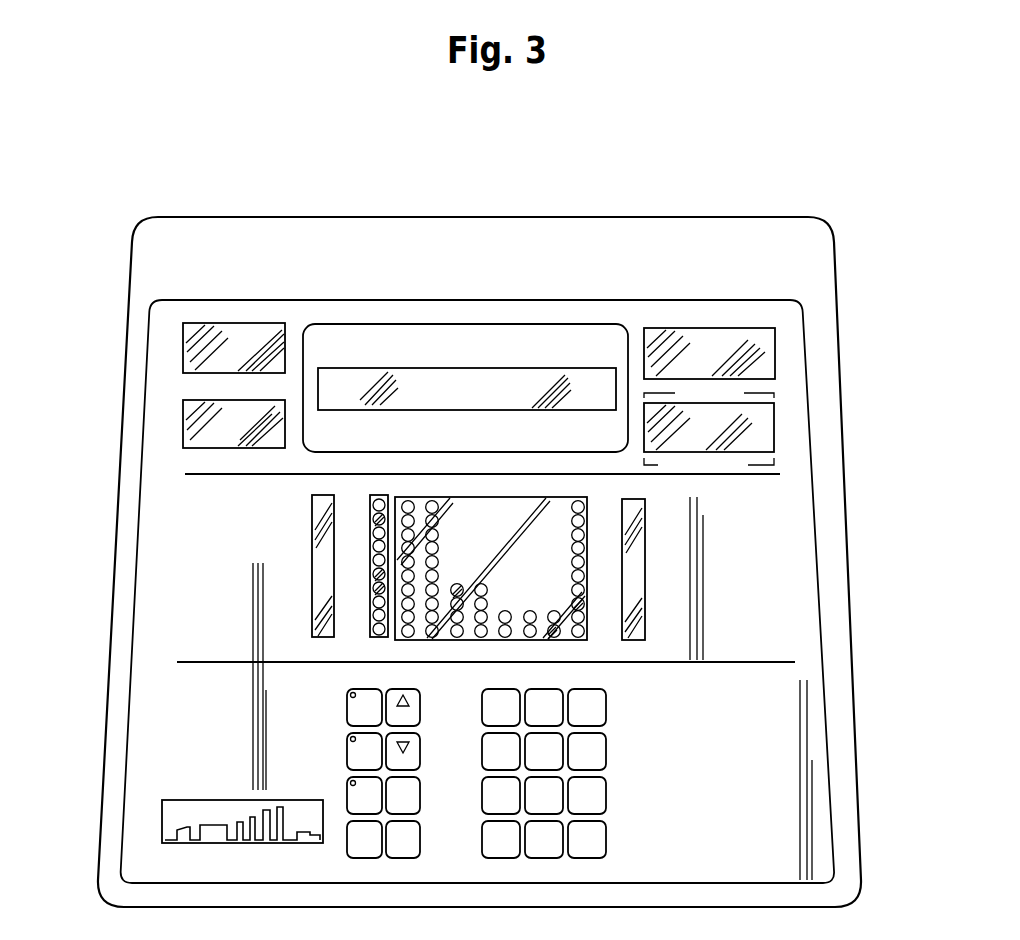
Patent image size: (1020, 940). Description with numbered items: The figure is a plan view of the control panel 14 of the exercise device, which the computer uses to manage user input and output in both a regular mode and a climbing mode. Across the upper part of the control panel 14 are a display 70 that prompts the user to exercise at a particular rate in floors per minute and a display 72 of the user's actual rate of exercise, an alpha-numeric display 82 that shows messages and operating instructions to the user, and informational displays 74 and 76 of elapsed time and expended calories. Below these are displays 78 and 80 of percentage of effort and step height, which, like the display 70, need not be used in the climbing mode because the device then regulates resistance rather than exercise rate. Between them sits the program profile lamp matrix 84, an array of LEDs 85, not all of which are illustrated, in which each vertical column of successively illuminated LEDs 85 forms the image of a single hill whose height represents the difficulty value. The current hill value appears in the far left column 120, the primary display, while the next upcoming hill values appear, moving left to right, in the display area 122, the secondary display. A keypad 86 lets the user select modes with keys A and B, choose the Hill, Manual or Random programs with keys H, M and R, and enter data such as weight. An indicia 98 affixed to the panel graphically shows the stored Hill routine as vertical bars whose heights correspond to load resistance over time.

The control panel 14 is at (672, 208).
The display 70 is at (183, 343).
The display 72 is at (183, 420).
The informational display 74 is at (768, 323).
The informational display 76 is at (758, 425).
The display 78 is at (310, 590).
The display 80 is at (647, 523).
The alpha-numeric display 82 is at (339, 367).
The program profile lamp matrix 84 is at (613, 645).
The LEDs 85 is at (372, 581).
The keypad 86 is at (632, 742).
The indicia 98 is at (163, 817).
The far left column 120 is at (372, 540).
The display area 122 is at (484, 537).